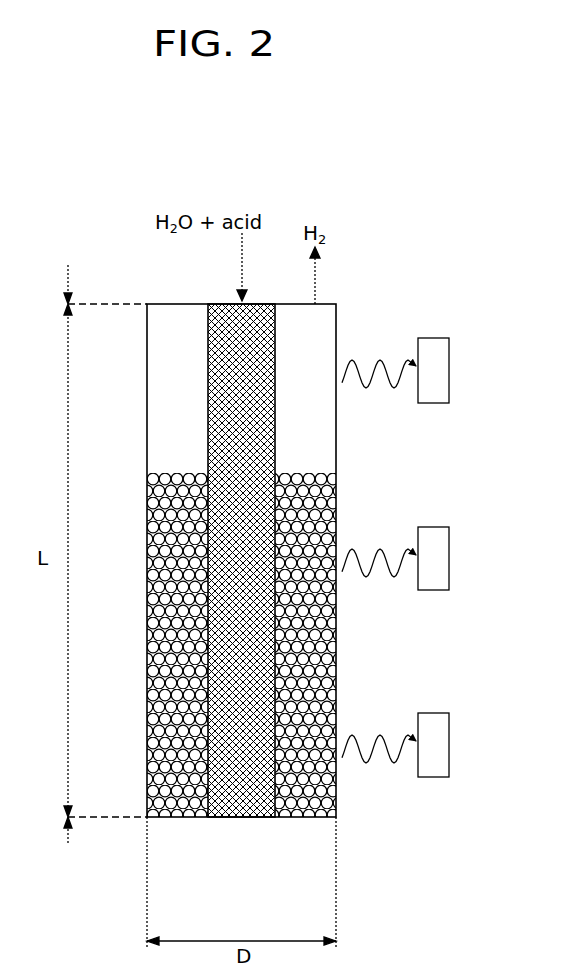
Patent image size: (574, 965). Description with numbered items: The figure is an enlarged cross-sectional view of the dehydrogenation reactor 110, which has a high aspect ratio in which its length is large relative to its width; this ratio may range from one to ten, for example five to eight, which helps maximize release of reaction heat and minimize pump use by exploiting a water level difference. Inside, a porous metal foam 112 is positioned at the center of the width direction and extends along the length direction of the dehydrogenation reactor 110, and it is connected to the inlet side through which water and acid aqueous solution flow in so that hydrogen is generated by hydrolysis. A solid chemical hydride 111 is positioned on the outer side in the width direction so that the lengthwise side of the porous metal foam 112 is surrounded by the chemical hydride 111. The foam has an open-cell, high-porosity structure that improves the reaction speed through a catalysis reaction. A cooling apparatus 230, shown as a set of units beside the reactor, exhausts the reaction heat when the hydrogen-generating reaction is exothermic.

The dehydrogenation reactor 110 is at (173, 168).
The chemical hydride 111 is at (147, 581).
The porous metal foam 112 is at (147, 634).
The cooling apparatus 230 is at (429, 326).